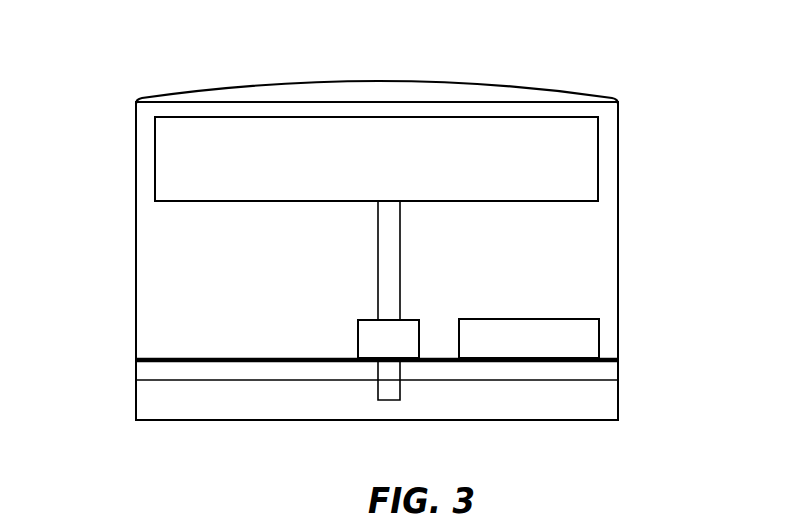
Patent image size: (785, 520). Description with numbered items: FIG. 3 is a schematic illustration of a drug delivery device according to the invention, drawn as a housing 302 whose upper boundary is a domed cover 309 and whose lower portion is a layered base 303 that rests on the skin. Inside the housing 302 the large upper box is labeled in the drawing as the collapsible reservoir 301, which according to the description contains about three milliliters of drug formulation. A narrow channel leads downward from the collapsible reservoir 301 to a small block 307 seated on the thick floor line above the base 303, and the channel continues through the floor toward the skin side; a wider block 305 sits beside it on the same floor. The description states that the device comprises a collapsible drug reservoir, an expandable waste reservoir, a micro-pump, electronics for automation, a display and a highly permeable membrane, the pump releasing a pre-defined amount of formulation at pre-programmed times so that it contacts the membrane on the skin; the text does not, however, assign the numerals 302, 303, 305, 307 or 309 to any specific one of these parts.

The collapsible reservoir 301 is at (155, 155).
The housing 302 is at (136, 263).
The base 303 is at (162, 412).
The pump 305 is at (599, 330).
The valve 307 is at (415, 318).
The cover 309 is at (511, 88).